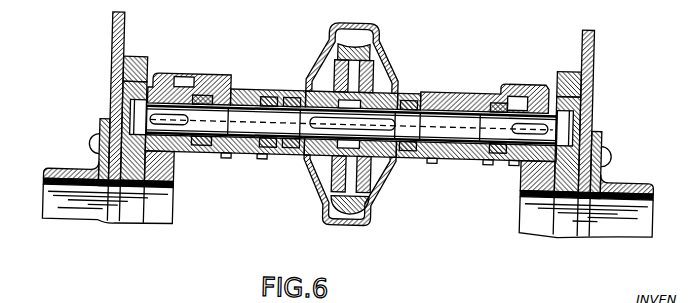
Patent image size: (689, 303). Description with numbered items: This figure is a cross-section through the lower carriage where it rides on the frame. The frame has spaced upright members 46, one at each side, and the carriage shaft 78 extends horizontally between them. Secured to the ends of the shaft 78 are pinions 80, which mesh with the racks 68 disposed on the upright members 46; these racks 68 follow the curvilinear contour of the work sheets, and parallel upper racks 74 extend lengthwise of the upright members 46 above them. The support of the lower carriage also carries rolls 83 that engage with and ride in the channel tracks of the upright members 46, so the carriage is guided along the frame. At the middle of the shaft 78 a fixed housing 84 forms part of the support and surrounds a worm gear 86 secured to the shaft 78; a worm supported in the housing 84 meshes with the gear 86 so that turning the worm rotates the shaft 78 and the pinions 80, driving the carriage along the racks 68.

The upright members 46 is at (110, 50).
The rolls 83 is at (112, 101).
The upper racks 74 is at (458, 95).
The shaft 78 is at (220, 154).
The pinions 80 is at (522, 156).
The racks 68 is at (522, 173).
The fixed housing 84 is at (317, 192).
The worm gear 86 is at (332, 202).